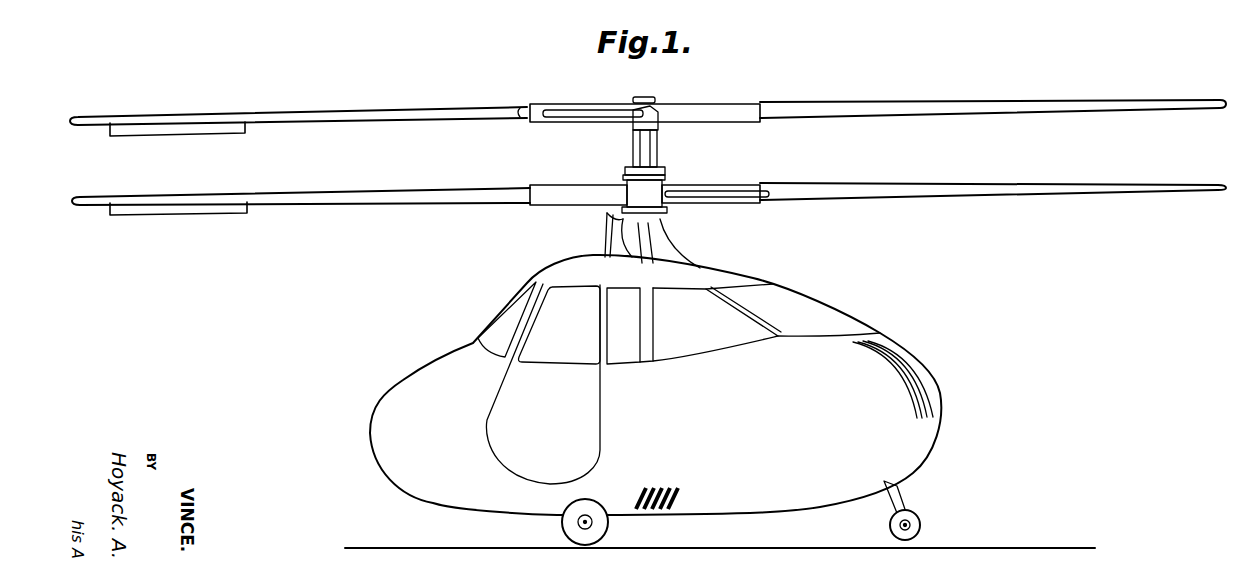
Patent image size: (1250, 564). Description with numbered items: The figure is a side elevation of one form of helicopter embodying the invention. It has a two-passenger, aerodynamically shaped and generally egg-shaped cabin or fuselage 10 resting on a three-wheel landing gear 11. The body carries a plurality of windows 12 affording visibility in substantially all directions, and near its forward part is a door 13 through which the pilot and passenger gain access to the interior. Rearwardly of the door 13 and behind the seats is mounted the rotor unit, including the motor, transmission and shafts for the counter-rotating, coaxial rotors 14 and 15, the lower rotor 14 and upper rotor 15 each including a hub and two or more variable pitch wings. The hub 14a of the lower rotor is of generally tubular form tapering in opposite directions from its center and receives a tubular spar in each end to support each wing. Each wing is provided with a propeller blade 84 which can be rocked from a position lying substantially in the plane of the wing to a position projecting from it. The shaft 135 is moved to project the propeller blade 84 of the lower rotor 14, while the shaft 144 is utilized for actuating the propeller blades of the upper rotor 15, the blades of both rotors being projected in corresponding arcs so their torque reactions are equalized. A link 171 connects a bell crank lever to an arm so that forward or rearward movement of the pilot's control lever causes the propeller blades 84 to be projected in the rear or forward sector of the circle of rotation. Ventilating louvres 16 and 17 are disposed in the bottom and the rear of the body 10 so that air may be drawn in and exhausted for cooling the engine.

The fuselage 10 is at (825, 360).
The three-wheel landing gear 11 is at (563, 525).
The windows 12 is at (512, 308).
The door 13 is at (513, 390).
The lower rotor 14 is at (884, 194).
The hub 14a is at (586, 171).
The upper rotor 15 is at (900, 108).
The ventilating louvres 16 is at (668, 505).
The ventilating louvres 17 is at (913, 370).
The propeller blade 84 is at (213, 125).
The shaft 135 is at (734, 165).
The shaft 144 is at (580, 112).
The link 171 is at (608, 233).